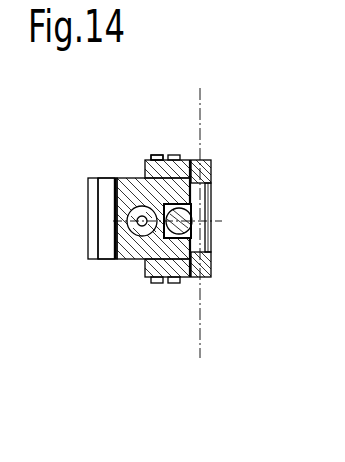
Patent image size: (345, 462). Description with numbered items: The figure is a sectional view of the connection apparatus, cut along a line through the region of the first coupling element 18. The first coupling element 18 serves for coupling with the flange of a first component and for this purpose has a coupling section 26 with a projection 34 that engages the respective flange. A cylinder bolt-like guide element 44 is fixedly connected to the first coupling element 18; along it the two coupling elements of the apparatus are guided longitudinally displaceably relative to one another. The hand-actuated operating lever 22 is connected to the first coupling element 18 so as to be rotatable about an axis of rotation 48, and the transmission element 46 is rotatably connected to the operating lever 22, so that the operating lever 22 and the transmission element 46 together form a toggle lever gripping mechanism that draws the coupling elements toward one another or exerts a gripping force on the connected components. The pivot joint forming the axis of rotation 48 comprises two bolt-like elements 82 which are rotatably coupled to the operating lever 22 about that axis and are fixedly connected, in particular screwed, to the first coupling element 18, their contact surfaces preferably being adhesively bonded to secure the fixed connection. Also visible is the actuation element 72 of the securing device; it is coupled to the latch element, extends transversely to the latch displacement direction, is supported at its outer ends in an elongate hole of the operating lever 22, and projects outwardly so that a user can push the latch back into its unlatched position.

The first coupling element 18 is at (118, 261).
The operating lever 22 is at (147, 272).
The coupling section 26 is at (108, 190).
The projection 34 is at (92, 206).
The guide element 44 is at (137, 207).
The transmission element 46 is at (202, 222).
The axis of rotation 48 is at (200, 113).
The actuation element 72 is at (157, 155).
The bolt-like elements 82 is at (208, 158).